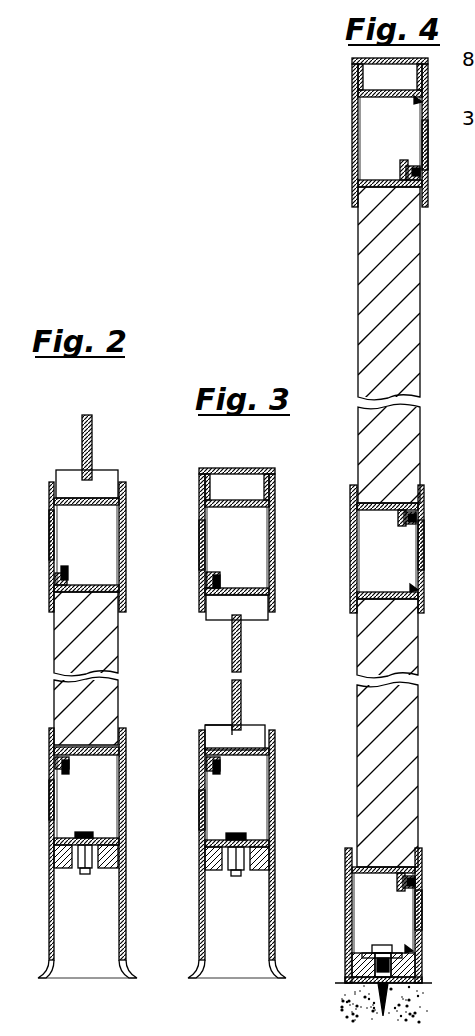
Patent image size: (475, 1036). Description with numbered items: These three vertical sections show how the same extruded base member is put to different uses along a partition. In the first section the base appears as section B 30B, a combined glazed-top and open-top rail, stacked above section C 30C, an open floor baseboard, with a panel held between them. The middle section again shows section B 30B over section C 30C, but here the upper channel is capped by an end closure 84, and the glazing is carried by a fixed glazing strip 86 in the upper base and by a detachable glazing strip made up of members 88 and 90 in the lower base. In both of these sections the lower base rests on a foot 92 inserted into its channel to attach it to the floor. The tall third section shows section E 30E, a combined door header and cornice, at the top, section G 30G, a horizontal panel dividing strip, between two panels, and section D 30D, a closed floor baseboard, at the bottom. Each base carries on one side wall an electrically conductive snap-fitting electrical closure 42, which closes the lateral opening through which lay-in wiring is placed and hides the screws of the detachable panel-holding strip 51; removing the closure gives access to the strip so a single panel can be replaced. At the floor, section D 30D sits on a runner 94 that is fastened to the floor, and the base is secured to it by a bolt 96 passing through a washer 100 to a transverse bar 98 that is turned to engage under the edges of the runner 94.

In FIG. 2, the base member section B 30B is at (124, 532).
In FIG. 3, the base member section B 30B is at (275, 532).
In FIG. 2, the base member section C 30C is at (124, 802).
In FIG. 3, the base member section C 30C is at (275, 798).
In FIG. 4, the base member section D 30D is at (345, 910).
In FIG. 4, the base member section E 30E is at (352, 128).
In FIG. 4, the base member section G 30G is at (350, 575).
In FIG. 2, the electrical closure 42 is at (49, 540).
In FIG. 3, the electrical closure 42 is at (199, 556).
In FIG. 4, the electrical closure 42 is at (428, 145).
In FIG. 2, the panel-holding strip 51 is at (49, 598).
In FIG. 3, the panel-holding strip 51 is at (199, 600).
In FIG. 4, the panel-holding strip 51 is at (428, 190).
In FIG. 3, the end closure 84 is at (235, 468).
In FIG. 4, the end closure 84 is at (358, 60).
In FIG. 2, the fixed glazing strip 86 is at (80, 476).
In FIG. 3, the fixed glazing strip 86 is at (243, 622).
In FIG. 3, the detachable glazing strip member 88 is at (252, 725).
In FIG. 3, the detachable glazing strip member 90 is at (218, 725).
In FIG. 2, the foot 92 is at (48, 910).
In FIG. 3, the foot 92 is at (199, 915).
In FIG. 4, the runner 94 is at (362, 990).
In FIG. 4, the bolt 96 is at (380, 944).
In FIG. 4, the transverse bar 98 is at (422, 978).
In FIG. 4, the washer 100 is at (395, 953).